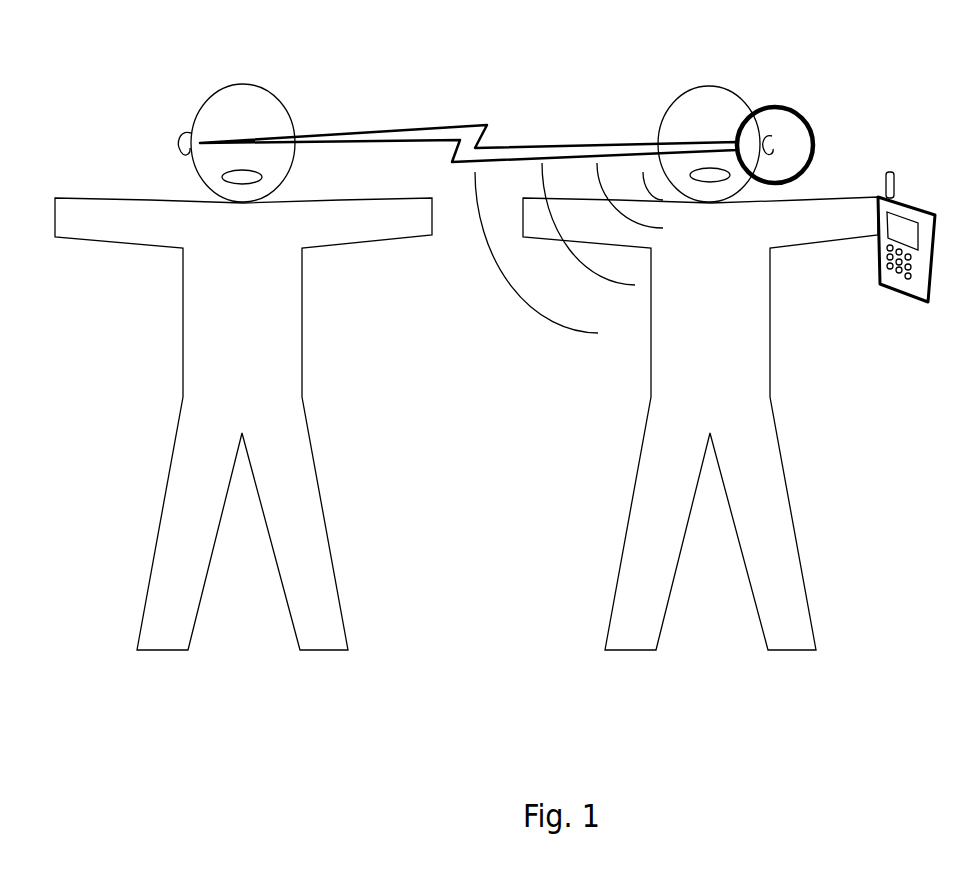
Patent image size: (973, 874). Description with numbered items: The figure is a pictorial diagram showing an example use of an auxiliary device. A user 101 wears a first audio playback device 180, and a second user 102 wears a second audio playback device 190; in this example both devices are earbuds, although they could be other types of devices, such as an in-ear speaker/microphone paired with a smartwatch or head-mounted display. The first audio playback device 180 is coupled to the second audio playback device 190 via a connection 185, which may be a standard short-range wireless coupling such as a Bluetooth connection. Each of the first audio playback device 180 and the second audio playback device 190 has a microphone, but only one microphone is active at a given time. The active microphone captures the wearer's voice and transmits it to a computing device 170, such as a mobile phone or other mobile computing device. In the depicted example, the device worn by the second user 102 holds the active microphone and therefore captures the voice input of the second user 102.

The user 101 is at (243, 367).
The second user 102 is at (700, 368).
The computing device 170 is at (930, 290).
The first audio playback device 180 is at (167, 135).
The connection 185 is at (457, 125).
The second audio playback device 190 is at (775, 128).